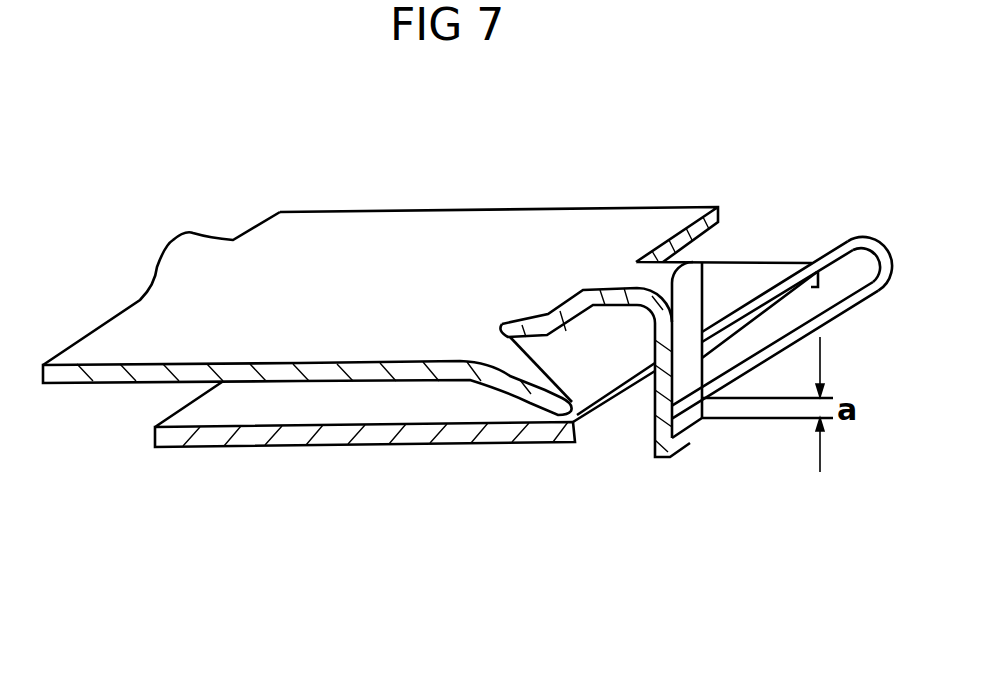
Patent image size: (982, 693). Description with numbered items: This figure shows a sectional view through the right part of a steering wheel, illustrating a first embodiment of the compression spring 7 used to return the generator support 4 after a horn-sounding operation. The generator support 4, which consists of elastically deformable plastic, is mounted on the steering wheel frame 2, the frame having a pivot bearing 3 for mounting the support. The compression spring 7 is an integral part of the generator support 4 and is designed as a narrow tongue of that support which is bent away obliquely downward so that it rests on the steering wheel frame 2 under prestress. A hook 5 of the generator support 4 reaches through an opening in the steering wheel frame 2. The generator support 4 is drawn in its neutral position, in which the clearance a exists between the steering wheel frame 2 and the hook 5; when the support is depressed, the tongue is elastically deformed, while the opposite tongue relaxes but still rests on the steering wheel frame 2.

The steering wheel frame 2 is at (157, 443).
The pivot bearing 3 is at (174, 240).
The generator support 4 is at (495, 236).
The hook 5 is at (668, 447).
The compression spring 7 is at (520, 358).